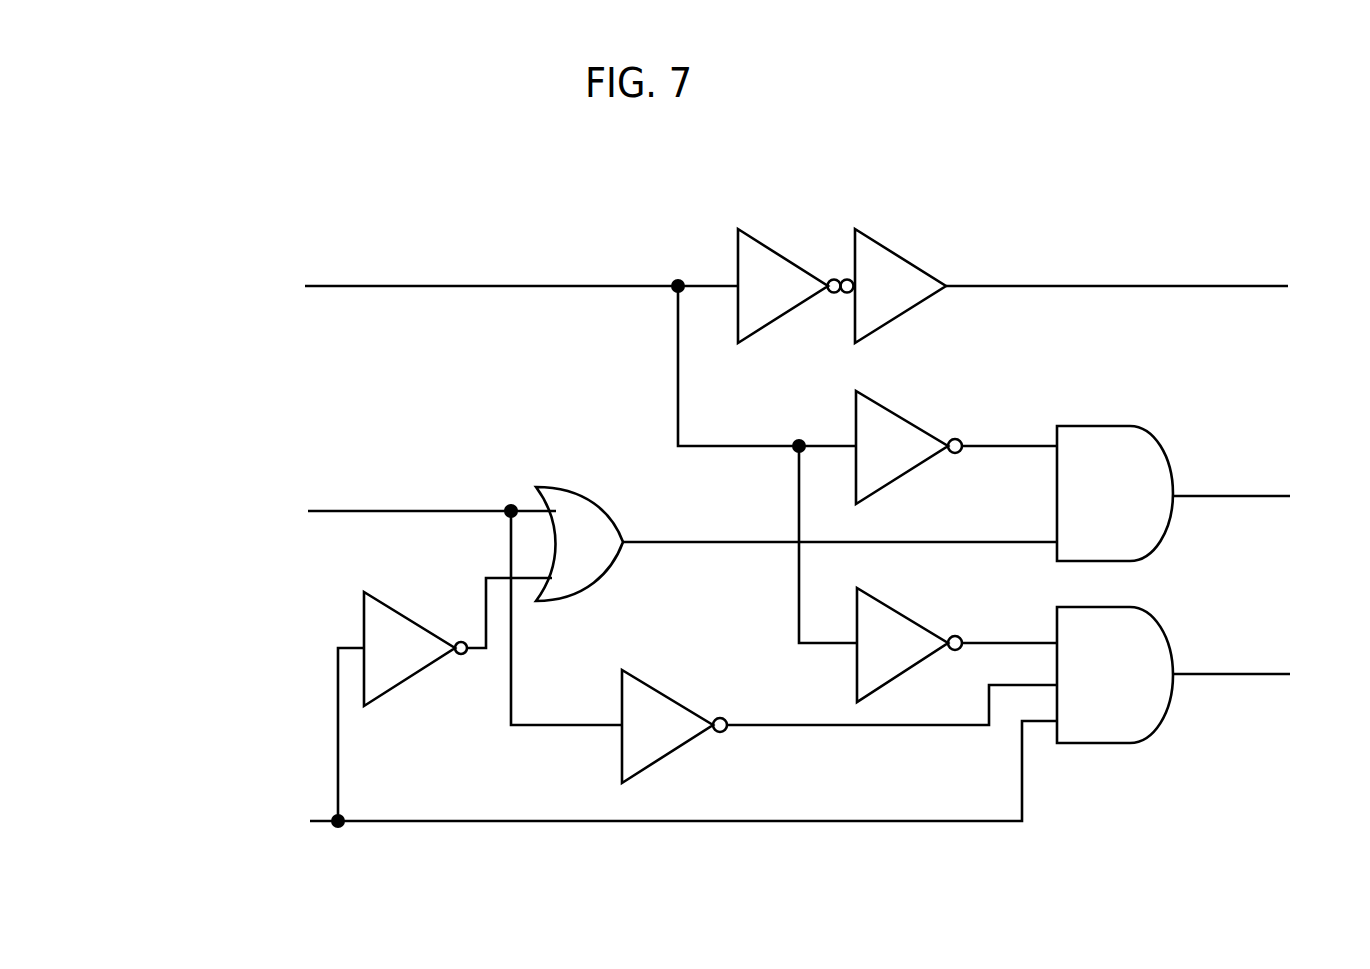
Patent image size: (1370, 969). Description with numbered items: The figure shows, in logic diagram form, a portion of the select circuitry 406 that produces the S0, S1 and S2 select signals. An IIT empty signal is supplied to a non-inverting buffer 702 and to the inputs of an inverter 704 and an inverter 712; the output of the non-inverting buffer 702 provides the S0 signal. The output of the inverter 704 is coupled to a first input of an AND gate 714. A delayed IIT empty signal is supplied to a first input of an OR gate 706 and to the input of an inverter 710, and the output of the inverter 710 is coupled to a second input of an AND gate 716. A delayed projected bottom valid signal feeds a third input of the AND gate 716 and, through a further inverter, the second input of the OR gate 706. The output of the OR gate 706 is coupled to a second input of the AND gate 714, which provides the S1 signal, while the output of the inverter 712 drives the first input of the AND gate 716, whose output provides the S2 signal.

The select circuitry 406 is at (1123, 235).
The non-inverting buffer 702 is at (900, 260).
The inverter 704 is at (893, 422).
The OR gate 706 is at (597, 498).
The inverter 710 is at (657, 697).
The inverter 712 is at (902, 613).
The AND gate 714 is at (1157, 455).
The AND gate 716 is at (1158, 633).